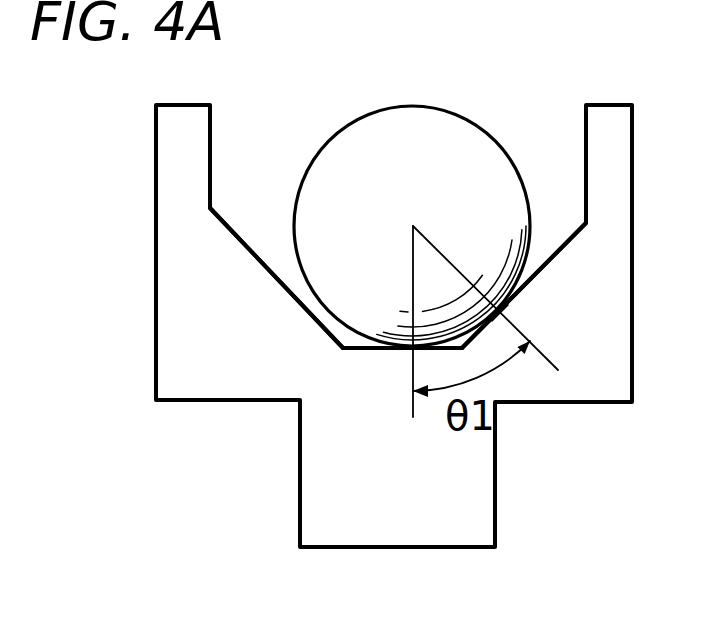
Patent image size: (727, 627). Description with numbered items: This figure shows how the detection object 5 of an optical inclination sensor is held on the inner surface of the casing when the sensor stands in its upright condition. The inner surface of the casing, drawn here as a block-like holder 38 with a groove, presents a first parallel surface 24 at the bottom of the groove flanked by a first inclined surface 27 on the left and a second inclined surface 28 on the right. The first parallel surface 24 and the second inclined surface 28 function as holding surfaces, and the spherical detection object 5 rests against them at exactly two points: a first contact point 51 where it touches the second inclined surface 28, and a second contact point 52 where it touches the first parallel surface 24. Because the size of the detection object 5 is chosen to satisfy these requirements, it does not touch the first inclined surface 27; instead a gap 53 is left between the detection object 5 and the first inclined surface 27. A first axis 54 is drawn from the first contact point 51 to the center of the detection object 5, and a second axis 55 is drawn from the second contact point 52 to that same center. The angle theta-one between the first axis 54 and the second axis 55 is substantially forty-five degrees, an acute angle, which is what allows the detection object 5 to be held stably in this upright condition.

The detection object 5 is at (458, 142).
The first parallel surface 24 is at (360, 349).
The first inclined surface 27 is at (240, 240).
The second inclined surface 28 is at (563, 246).
The holder / housing block 38 is at (156, 362).
The first contact point 51 is at (500, 313).
The second contact point 52 is at (412, 349).
The gap 53 is at (300, 288).
The first axis 54 is at (545, 357).
The second axis 55 is at (410, 405).